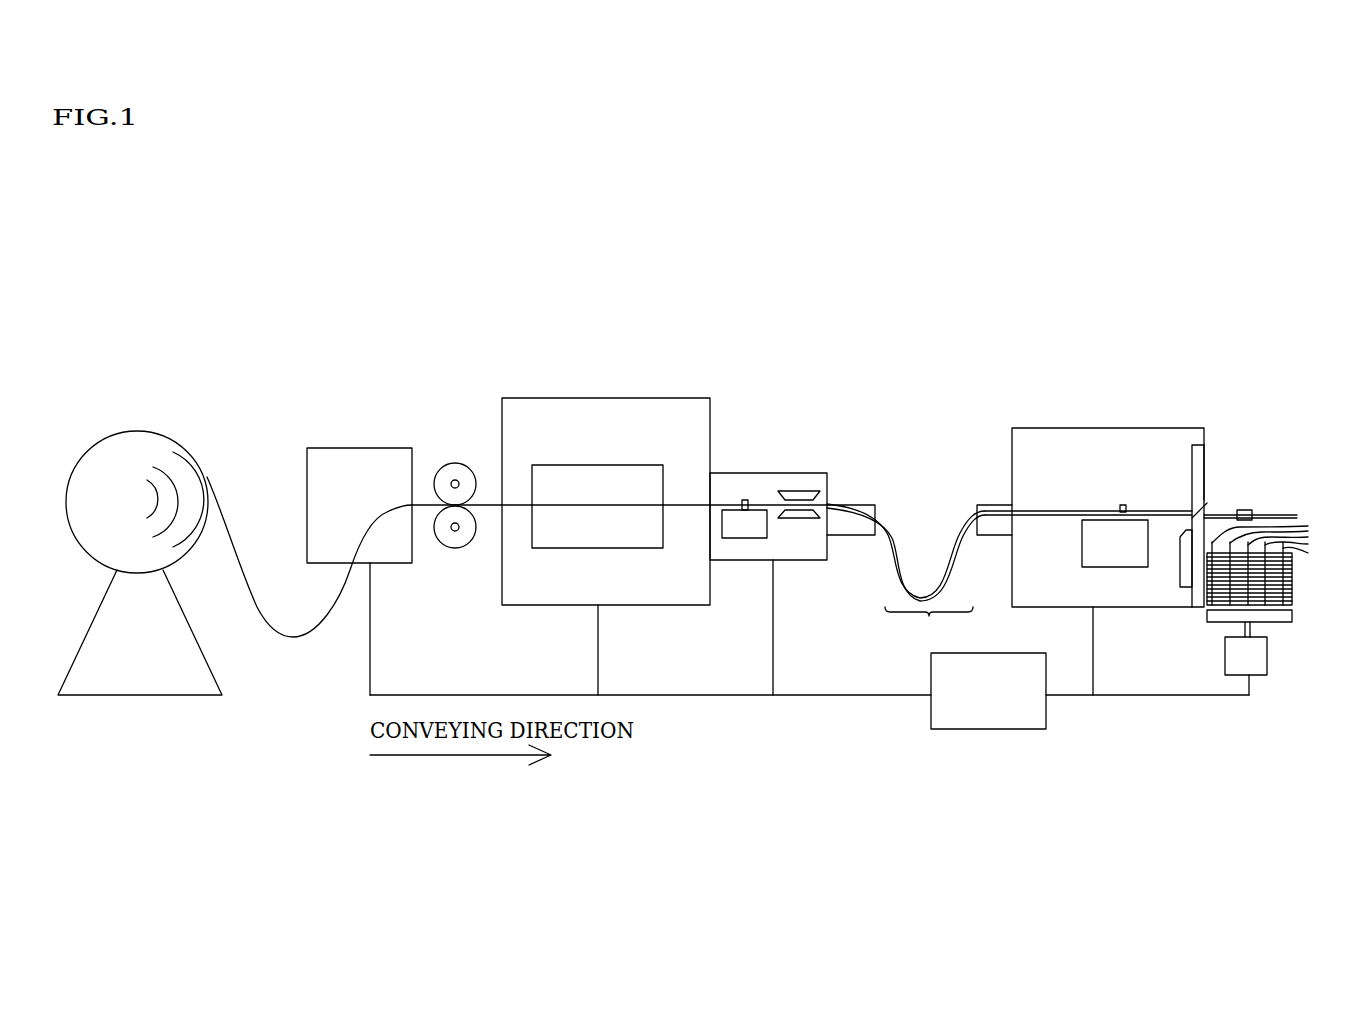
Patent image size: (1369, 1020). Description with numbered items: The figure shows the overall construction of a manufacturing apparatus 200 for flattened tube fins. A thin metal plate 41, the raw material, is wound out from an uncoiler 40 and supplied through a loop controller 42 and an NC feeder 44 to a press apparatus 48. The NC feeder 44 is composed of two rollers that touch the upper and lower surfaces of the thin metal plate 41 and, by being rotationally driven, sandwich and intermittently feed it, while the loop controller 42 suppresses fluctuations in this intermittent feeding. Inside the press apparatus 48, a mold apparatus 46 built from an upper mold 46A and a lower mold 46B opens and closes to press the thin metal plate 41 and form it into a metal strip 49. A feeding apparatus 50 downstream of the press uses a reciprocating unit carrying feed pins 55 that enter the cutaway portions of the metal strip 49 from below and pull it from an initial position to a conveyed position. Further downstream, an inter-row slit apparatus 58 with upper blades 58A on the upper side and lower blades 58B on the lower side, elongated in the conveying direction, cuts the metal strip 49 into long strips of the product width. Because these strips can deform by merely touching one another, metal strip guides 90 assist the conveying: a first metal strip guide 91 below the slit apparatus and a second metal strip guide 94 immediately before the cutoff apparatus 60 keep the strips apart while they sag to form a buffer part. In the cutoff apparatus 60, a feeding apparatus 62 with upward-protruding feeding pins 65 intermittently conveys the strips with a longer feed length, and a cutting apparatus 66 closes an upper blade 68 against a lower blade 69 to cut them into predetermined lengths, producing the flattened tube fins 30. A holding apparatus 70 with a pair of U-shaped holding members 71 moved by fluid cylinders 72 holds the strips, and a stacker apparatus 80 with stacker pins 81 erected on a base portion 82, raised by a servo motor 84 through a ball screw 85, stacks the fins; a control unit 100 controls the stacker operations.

The manufacturing apparatus for flattened tube fins 200 is at (768, 285).
The uncoiler 40 is at (173, 460).
The thin metal plate 41 is at (233, 540).
The loop controller 42 is at (355, 457).
The NC feeder 44 is at (453, 467).
The mold apparatus for flattened tube fins 46 is at (597, 462).
The upper mold 46A is at (568, 480).
The lower mold 46B is at (592, 527).
The press apparatus 48 is at (645, 395).
The metal strip 49 is at (693, 503).
The feeding apparatus 50 is at (747, 543).
The feed pins 55 is at (745, 498).
The inter-row slit apparatus 58 is at (792, 482).
The upper blades 58A is at (802, 495).
The lower blades 58B is at (800, 515).
The metal strip guides 90 is at (883, 388).
The first metal strip guide 91 is at (848, 523).
The second metal strip guide 94 is at (1000, 523).
The cutoff apparatus 60 is at (1020, 433).
The feeding apparatus 62 is at (1115, 570).
The feeding pins 65 is at (1123, 505).
The cutting apparatus 66 is at (1195, 435).
The upper blade 68 is at (1203, 453).
The lower blade 69 is at (1188, 580).
The holding apparatus 70 is at (1255, 470).
The holding members 71 is at (1297, 513).
The fluid cylinders 72 is at (1250, 510).
The stacker apparatus 80 is at (1300, 603).
The stacker pins 81 is at (1289, 550).
The flattened tube fins 30 is at (1289, 561).
The base portion 82 is at (1285, 617).
The ball screw 85 is at (1251, 633).
The servo motor 84 is at (1253, 668).
The control unit 100 is at (992, 718).